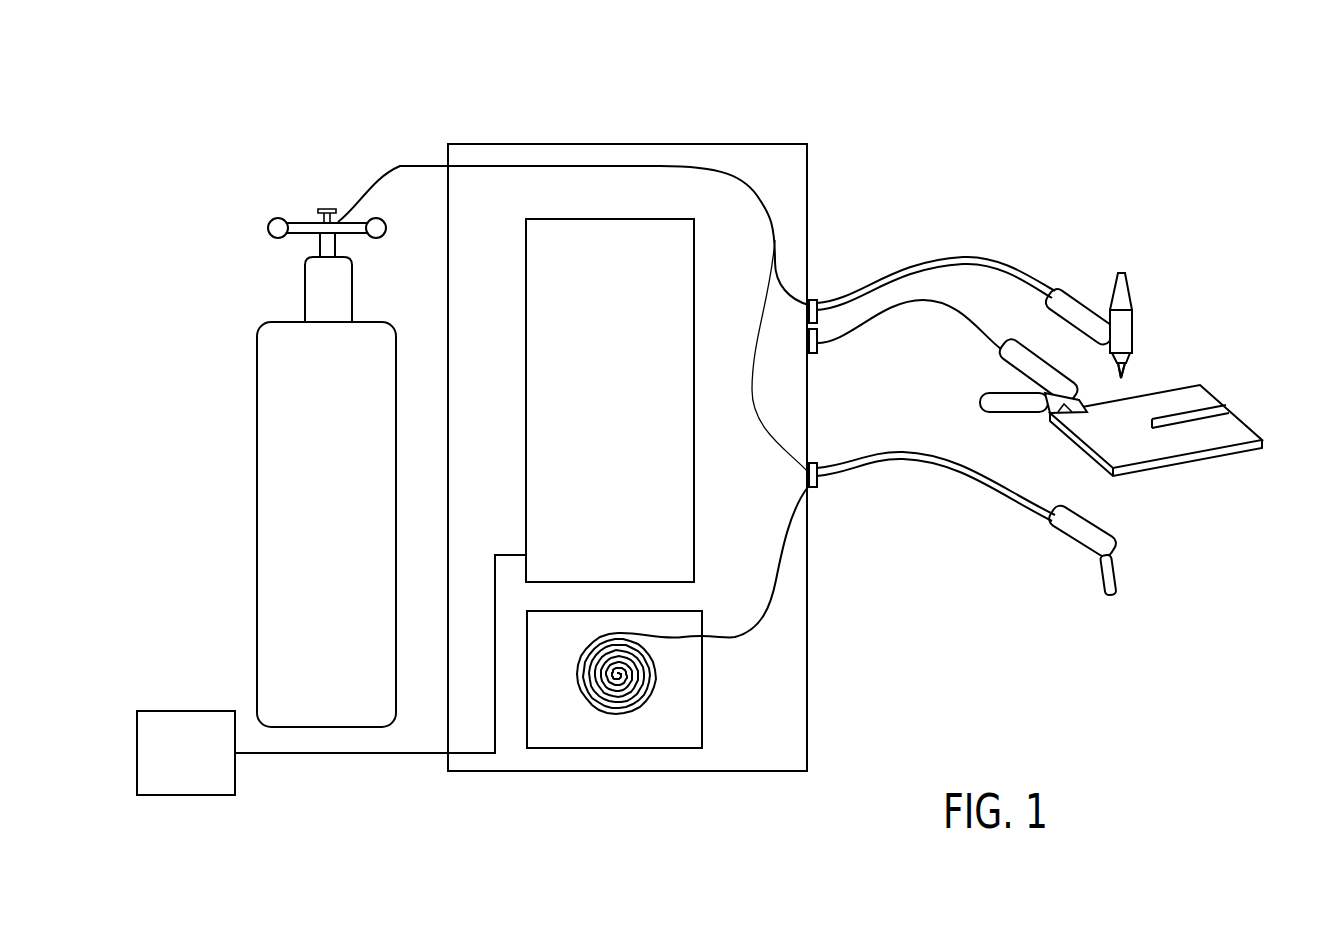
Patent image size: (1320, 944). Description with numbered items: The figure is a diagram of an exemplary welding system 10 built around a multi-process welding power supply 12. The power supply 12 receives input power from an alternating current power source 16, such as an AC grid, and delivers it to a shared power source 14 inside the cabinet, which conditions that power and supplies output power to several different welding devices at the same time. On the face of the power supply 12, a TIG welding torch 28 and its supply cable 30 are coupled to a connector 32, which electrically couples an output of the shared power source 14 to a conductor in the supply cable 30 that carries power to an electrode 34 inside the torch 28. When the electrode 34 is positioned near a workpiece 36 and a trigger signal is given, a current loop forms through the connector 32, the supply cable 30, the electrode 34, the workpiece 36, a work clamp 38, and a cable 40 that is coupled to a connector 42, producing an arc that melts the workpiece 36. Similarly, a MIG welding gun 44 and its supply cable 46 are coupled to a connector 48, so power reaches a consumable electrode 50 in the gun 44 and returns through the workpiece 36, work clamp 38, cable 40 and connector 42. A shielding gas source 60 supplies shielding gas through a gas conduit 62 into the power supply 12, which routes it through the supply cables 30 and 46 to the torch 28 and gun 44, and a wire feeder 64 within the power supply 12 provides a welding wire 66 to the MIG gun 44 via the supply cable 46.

The system 10 is at (940, 64).
The welding power supply 12 is at (631, 138).
The shared power source 14 is at (600, 288).
The alternating current power source 16 is at (173, 760).
The TIG welding torch 28 is at (1081, 298).
The supply cable 30 is at (943, 256).
The connector 32 is at (811, 300).
The electrode 34 is at (1125, 375).
The workpiece 36 is at (1238, 427).
The work clamp 38 is at (978, 402).
The cable 40 is at (890, 316).
The connector 42 is at (813, 354).
The MIG welding gun 44 is at (1087, 527).
The supply cable 46 is at (950, 461).
The connector 48 is at (812, 463).
The consumable electrode 50 is at (1109, 595).
The shielding gas source 60 is at (315, 533).
The gas conduit 62 is at (396, 166).
The wire feeder 64 is at (668, 708).
The welding wire 66 is at (733, 638).